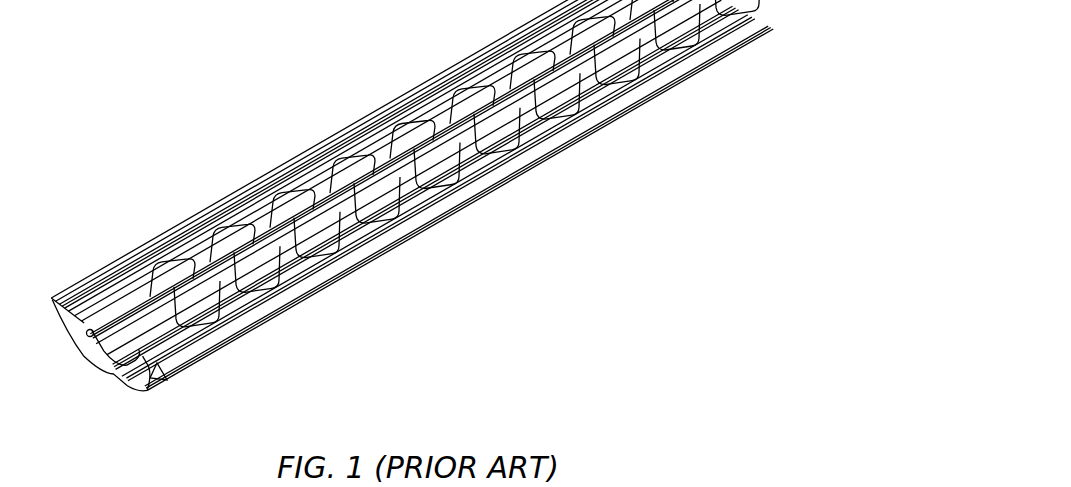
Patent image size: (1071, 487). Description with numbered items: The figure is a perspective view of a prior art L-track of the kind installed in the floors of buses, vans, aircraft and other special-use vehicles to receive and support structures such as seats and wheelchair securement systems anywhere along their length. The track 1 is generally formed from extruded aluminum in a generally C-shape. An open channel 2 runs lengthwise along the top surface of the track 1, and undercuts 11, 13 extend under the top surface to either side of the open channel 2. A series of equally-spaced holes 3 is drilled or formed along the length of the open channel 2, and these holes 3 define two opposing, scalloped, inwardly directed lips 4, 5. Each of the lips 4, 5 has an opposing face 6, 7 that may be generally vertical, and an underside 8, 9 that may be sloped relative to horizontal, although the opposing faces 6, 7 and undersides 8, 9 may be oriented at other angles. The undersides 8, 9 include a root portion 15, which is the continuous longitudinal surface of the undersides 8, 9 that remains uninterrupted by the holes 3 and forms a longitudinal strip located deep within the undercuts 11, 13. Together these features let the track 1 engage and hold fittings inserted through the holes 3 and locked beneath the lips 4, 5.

The track 1 is at (410, 250).
The open channel 2 is at (248, 250).
The holes 3 is at (284, 252).
The lip 4 is at (87, 325).
The lip 5 is at (193, 343).
The opposing face 6 is at (160, 292).
The opposing face 7 is at (172, 297).
The underside 8 is at (89, 337).
The underside 9 is at (121, 363).
The undercut 11 is at (450, 114).
The undercut 13 is at (527, 104).
The root portion 15 is at (178, 364).